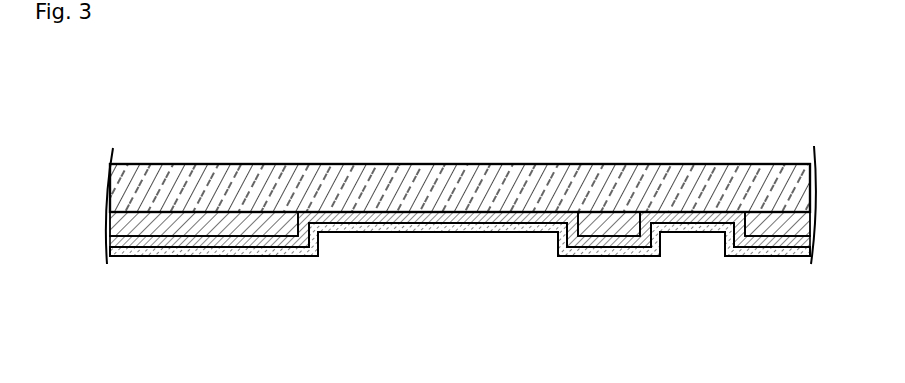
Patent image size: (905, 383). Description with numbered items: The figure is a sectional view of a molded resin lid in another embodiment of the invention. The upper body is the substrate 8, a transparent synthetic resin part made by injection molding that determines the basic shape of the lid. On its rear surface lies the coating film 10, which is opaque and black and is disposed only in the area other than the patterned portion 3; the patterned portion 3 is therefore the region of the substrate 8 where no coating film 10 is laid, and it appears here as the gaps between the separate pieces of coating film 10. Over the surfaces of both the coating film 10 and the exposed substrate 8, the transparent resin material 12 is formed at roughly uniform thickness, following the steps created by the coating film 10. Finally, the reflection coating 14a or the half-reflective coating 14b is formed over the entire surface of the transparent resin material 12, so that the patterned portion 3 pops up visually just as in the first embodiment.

The patterned portion 3 is at (525, 213).
The substrate 8 is at (275, 180).
The coating film 10 is at (190, 257).
The transparent resin material 12 is at (385, 233).
The reflection coating 14a is at (442, 233).
The half-reflective coating 14b is at (460, 244).